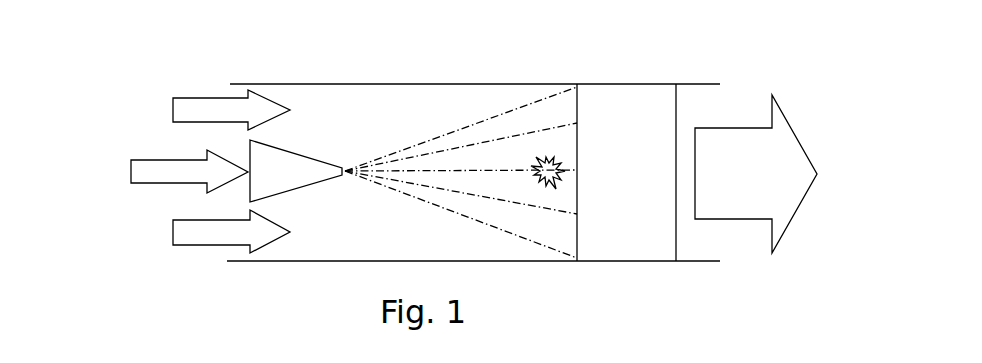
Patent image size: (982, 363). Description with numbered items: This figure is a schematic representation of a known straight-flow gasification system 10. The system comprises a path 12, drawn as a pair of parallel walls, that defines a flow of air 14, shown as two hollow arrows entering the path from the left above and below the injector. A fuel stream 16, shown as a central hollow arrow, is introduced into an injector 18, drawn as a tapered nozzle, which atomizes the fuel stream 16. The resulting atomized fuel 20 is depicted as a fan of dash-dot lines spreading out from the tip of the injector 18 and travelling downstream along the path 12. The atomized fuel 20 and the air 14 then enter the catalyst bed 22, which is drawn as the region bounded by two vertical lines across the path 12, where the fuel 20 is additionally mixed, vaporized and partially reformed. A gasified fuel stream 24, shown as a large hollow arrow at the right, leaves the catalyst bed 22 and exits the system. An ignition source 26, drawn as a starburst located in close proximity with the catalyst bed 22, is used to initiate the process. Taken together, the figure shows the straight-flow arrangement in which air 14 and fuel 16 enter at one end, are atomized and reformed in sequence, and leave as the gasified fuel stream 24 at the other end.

The straight-flow gasification system 10 is at (473, 169).
The path 12 is at (352, 66).
The flow of air 14 is at (188, 98).
The fuel stream 16 is at (133, 168).
The injector 18 is at (296, 163).
The atomized fuel 20 is at (405, 170).
The catalyst bed 22 is at (620, 235).
The gasified fuel stream 24 is at (747, 203).
The ignition source 26 is at (543, 167).